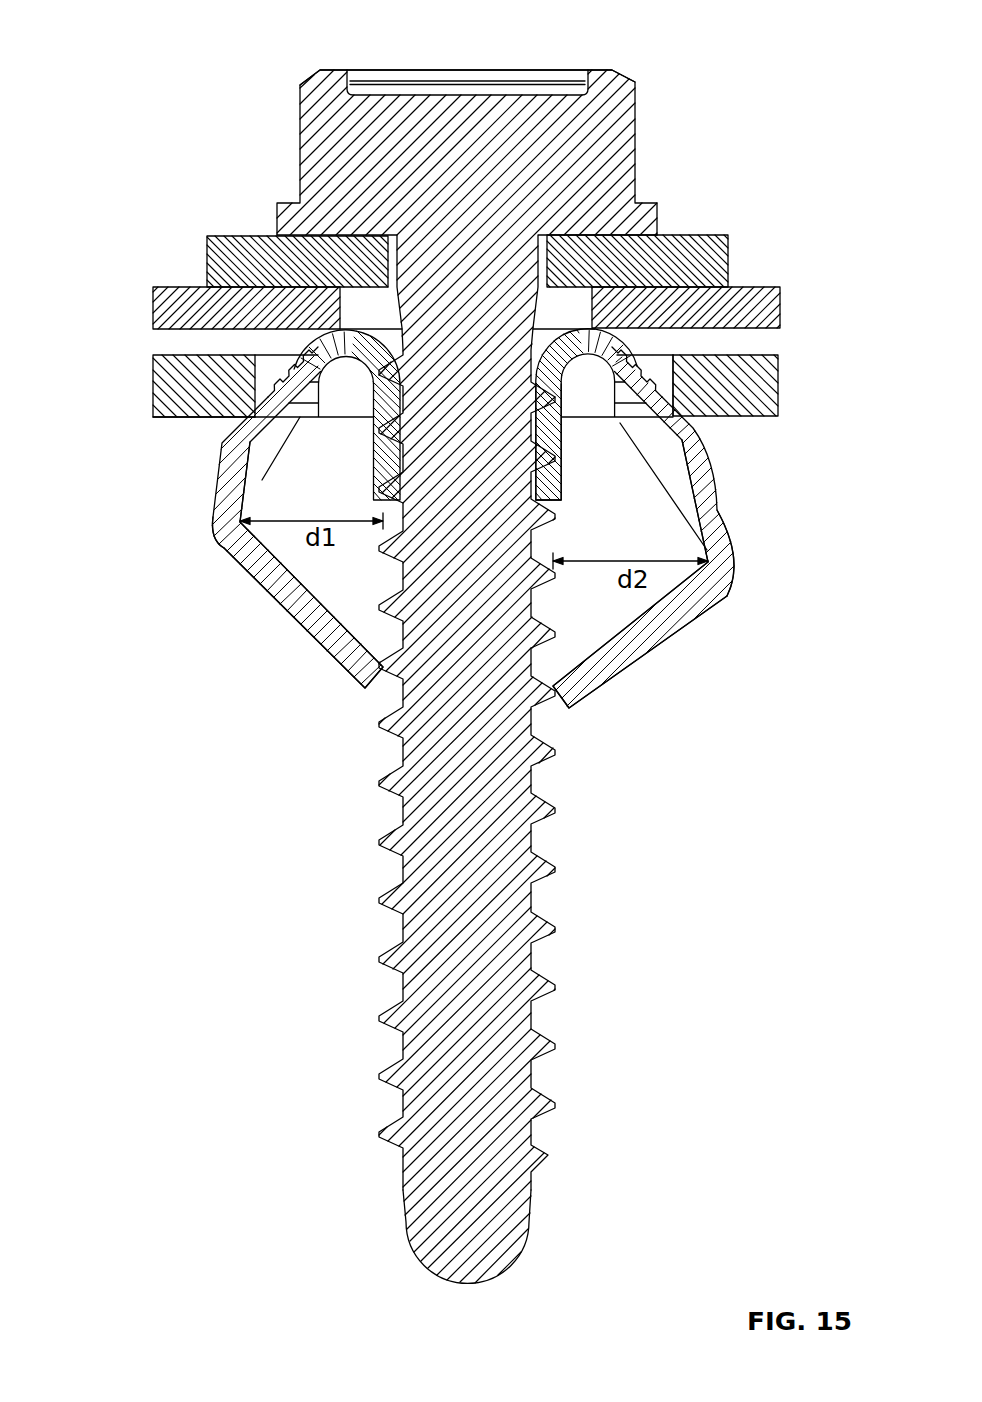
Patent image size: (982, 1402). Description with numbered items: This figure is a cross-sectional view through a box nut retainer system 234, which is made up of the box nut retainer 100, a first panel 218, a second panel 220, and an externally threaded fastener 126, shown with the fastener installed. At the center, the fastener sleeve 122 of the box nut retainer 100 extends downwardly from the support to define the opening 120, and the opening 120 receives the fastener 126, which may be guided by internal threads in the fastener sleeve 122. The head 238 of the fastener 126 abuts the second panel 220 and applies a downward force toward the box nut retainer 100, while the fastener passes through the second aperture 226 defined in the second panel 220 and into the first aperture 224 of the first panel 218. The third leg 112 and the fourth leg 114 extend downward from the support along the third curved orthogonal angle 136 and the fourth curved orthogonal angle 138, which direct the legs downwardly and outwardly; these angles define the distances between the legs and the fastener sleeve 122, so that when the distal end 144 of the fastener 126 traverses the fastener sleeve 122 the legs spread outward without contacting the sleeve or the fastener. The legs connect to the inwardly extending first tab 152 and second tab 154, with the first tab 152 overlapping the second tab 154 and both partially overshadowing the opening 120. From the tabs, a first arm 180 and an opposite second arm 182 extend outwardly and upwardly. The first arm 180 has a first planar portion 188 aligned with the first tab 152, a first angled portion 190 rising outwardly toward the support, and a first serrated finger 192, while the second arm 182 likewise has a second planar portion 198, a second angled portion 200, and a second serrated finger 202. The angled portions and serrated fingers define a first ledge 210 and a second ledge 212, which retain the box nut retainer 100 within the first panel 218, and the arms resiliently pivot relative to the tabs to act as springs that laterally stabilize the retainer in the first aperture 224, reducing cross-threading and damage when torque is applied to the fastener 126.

The box nut retainer 100 is at (740, 650).
The third leg 112 is at (262, 478).
The fourth leg 114 is at (667, 465).
The opening 120 is at (394, 342).
The fastener sleeve 122 is at (565, 500).
The fastener 126 is at (623, 132).
The third curved orthogonal angle 136 is at (327, 336).
The fourth curved orthogonal angle 138 is at (612, 340).
The distal end 144 is at (497, 1255).
The first tab 152 is at (293, 623).
The second tab 154 is at (595, 683).
The first arm 180 is at (227, 468).
The second arm 182 is at (703, 485).
The first planar portion 188 is at (240, 563).
The first angled portion 190 is at (220, 497).
The first serrated finger 192 is at (170, 402).
The second planar portion 198 is at (698, 600).
The second angled portion 200 is at (718, 525).
The second serrated finger 202 is at (673, 405).
The first ledge 210 is at (237, 435).
The second ledge 212 is at (698, 443).
The first panel 218 is at (767, 392).
The second panel 220 is at (762, 288).
The first aperture 224 is at (352, 405).
The second aperture 226 is at (570, 295).
The box nut retainer system 234 is at (215, 42).
The head 238 is at (604, 108).